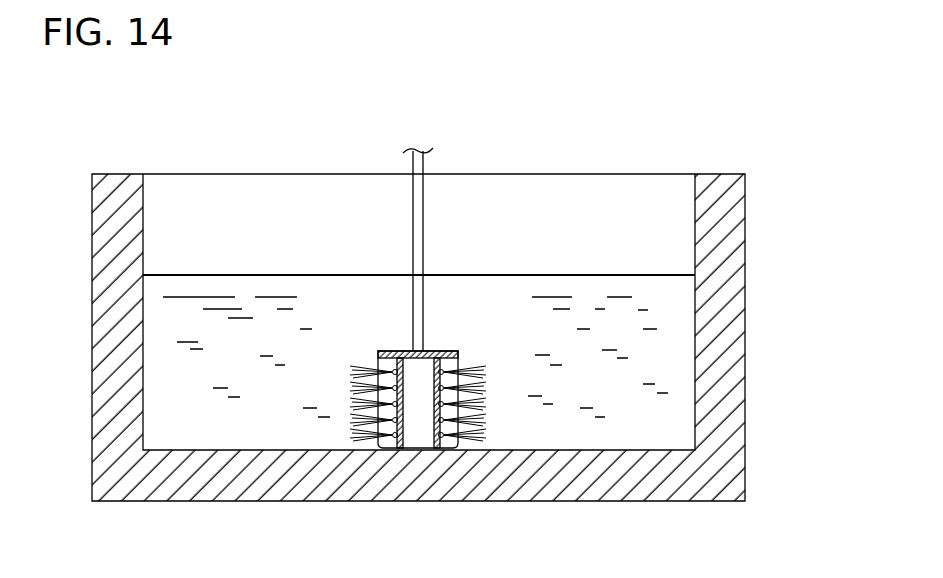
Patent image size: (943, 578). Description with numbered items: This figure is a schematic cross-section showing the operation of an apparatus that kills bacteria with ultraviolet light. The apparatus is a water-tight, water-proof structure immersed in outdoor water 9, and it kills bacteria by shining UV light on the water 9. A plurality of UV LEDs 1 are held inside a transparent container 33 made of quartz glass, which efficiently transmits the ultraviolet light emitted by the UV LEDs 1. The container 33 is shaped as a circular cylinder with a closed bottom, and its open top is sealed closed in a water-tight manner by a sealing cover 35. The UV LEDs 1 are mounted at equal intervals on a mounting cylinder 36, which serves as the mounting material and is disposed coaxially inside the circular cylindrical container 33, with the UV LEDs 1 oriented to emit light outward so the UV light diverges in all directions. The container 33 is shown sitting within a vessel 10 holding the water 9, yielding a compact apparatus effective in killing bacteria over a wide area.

The UV LED 1 is at (450, 349).
The water 9 is at (603, 330).
The container 10 is at (720, 341).
The container 33 is at (592, 532).
The sealing cover 35 is at (389, 352).
The mounting cylinder 36 is at (436, 430).